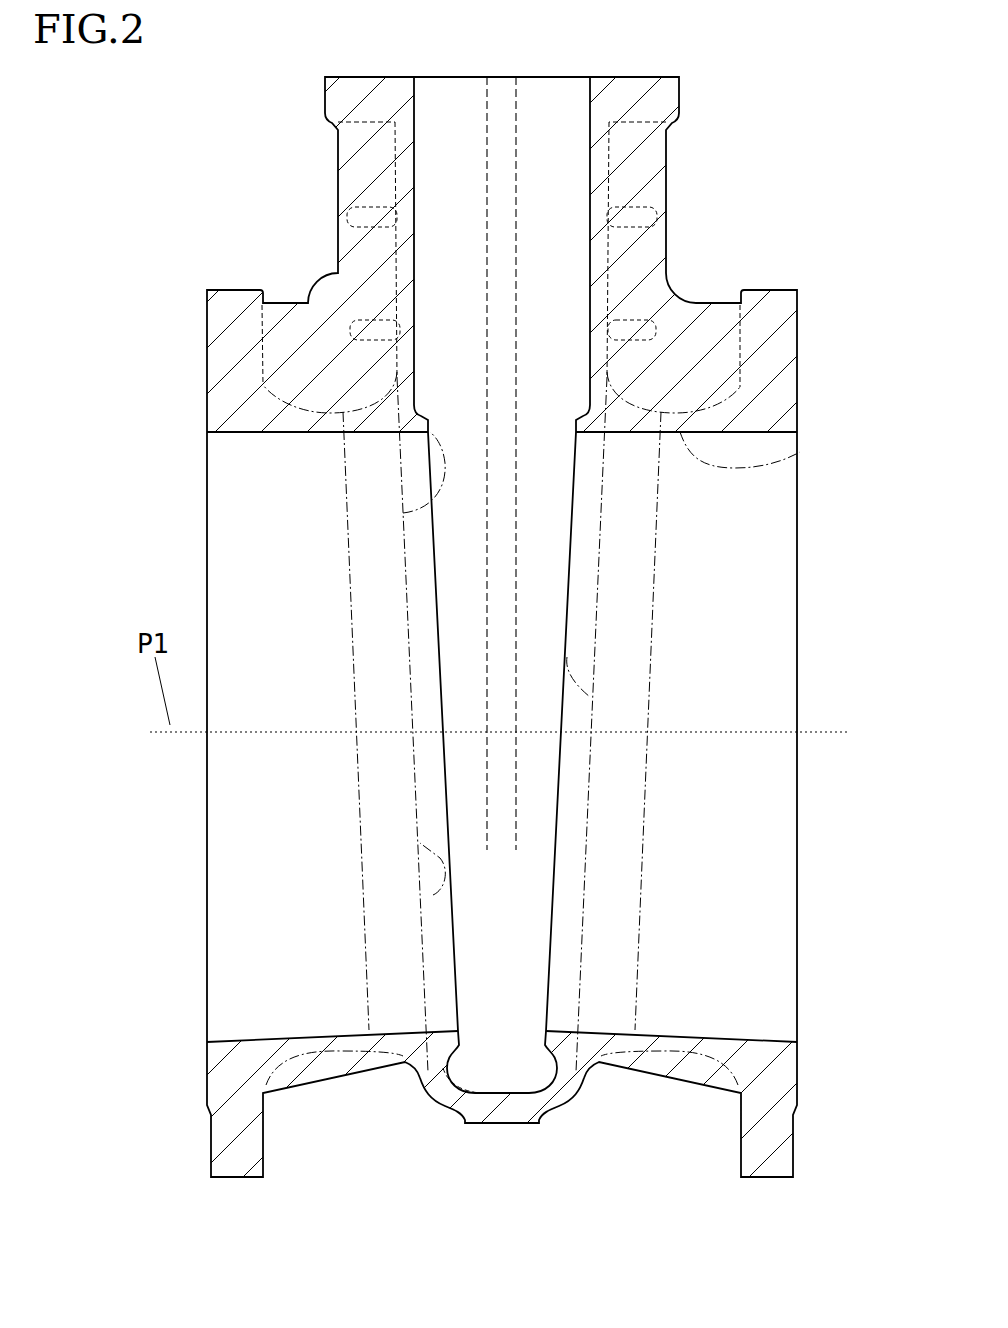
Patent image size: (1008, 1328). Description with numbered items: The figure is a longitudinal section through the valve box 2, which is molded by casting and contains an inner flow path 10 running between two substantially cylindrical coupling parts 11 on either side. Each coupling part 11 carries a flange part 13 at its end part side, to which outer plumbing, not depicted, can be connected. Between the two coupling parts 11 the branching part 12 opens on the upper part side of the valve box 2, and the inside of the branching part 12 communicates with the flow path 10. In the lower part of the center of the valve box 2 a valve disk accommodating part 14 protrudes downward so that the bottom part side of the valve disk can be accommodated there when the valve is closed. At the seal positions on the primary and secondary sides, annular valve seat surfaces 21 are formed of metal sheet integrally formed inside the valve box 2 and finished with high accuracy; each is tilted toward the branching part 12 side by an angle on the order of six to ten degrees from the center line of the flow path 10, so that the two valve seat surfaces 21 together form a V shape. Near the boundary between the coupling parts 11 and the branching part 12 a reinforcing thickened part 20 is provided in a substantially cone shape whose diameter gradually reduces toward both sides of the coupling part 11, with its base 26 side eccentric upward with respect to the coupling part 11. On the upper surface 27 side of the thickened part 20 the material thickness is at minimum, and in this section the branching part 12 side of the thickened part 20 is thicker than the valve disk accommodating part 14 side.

The valve box 2 is at (503, 1147).
The inner flow path 10 is at (270, 432).
The coupling part 11 is at (805, 448).
The branching part 12 is at (667, 243).
The flange part 13 is at (767, 343).
The valve disk accommodating part 14 is at (443, 1073).
The reinforcing thickened part 20 is at (263, 387).
The valve seat surface 21 is at (403, 513).
The base 26 is at (433, 893).
The upper surface 27 is at (357, 755).